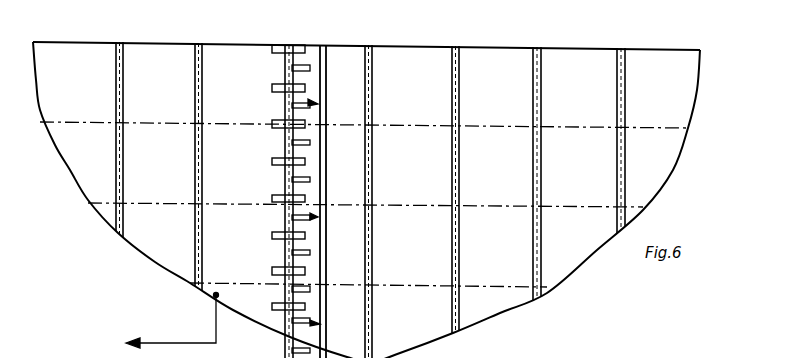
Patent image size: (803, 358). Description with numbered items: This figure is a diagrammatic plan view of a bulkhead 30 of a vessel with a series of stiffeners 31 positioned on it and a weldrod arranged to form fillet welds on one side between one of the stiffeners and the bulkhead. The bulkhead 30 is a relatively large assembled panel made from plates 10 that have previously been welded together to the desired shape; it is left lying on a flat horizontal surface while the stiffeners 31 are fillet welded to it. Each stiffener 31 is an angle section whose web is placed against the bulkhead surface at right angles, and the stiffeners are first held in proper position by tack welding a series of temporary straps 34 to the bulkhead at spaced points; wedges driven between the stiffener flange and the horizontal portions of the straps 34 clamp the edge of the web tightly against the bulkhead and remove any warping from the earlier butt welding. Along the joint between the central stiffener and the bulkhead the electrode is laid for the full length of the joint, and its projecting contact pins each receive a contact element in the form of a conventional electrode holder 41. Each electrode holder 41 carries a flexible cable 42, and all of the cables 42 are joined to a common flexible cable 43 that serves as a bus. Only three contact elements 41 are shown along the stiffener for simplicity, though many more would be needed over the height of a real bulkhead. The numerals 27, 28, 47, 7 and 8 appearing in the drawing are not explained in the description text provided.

The plates 10 is at (366, 179).
The center stiffener 27 is at (298, 179).
The adjacent stiffener 28 is at (347, 180).
The bulkhead 30 is at (88, 167).
The stiffeners 31 is at (116, 75).
The temporary straps 34 is at (272, 88).
The electrode holder 41 is at (305, 107).
The flexible cable 42 is at (314, 104).
The common flexible cable 43 is at (323, 158).
The flange 47 is at (305, 143).
The section line of FIG. 7 is at (262, 325).
The section line of FIG. 8 is at (262, 255).